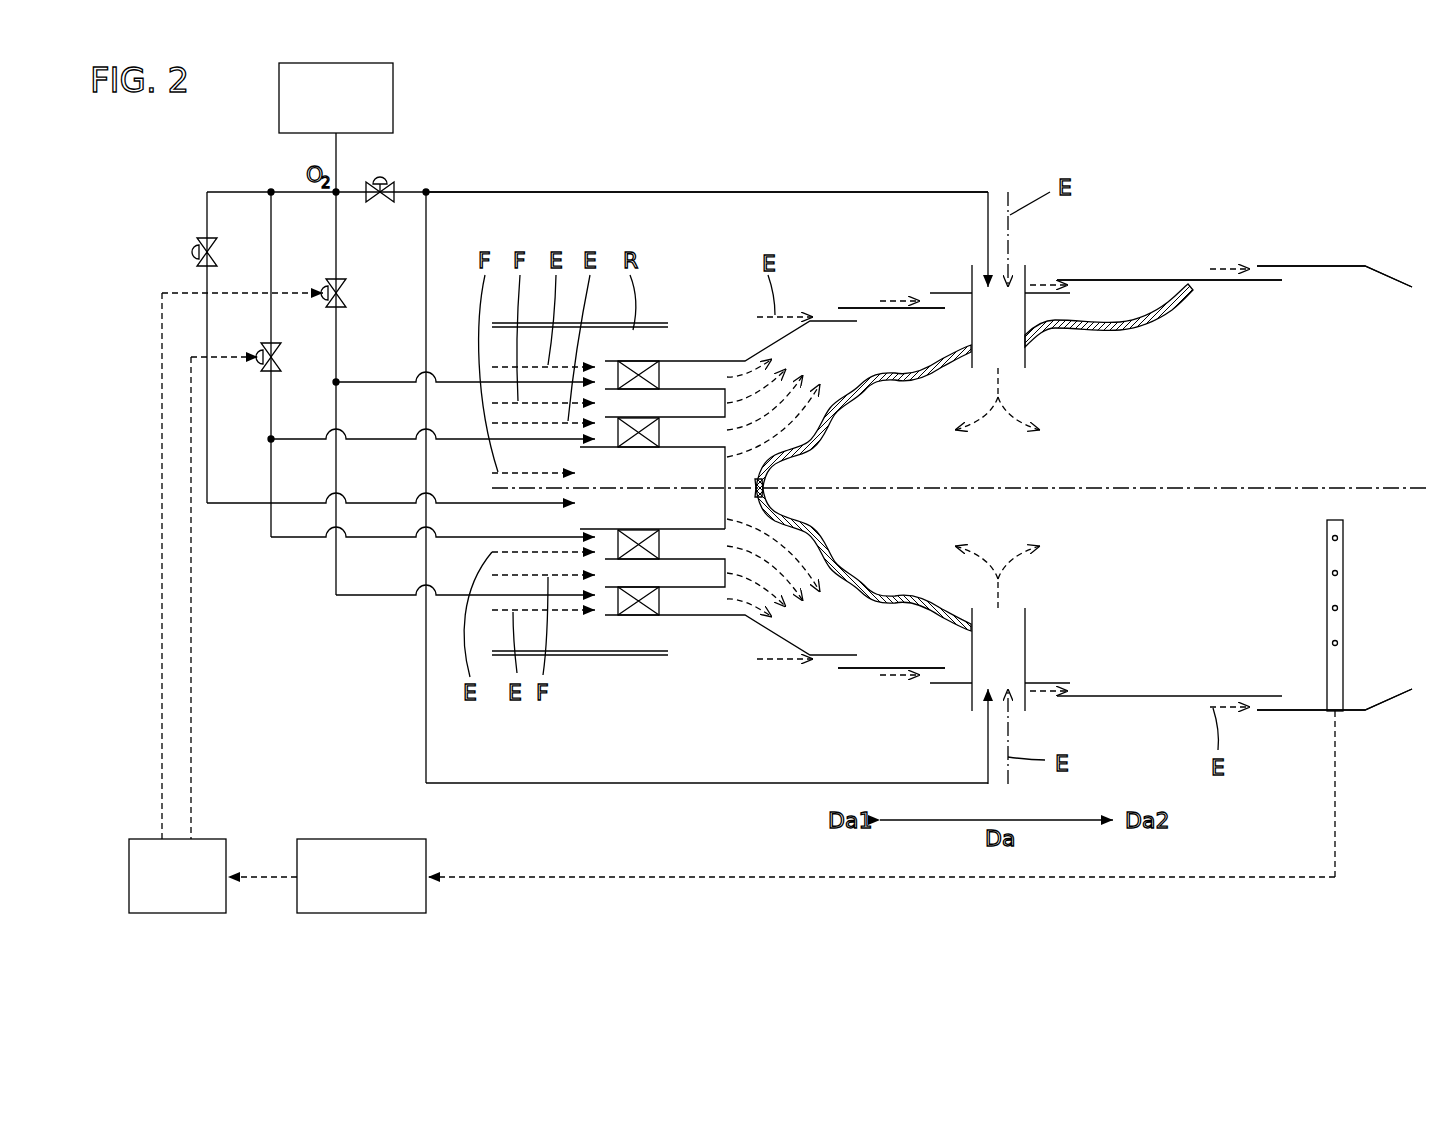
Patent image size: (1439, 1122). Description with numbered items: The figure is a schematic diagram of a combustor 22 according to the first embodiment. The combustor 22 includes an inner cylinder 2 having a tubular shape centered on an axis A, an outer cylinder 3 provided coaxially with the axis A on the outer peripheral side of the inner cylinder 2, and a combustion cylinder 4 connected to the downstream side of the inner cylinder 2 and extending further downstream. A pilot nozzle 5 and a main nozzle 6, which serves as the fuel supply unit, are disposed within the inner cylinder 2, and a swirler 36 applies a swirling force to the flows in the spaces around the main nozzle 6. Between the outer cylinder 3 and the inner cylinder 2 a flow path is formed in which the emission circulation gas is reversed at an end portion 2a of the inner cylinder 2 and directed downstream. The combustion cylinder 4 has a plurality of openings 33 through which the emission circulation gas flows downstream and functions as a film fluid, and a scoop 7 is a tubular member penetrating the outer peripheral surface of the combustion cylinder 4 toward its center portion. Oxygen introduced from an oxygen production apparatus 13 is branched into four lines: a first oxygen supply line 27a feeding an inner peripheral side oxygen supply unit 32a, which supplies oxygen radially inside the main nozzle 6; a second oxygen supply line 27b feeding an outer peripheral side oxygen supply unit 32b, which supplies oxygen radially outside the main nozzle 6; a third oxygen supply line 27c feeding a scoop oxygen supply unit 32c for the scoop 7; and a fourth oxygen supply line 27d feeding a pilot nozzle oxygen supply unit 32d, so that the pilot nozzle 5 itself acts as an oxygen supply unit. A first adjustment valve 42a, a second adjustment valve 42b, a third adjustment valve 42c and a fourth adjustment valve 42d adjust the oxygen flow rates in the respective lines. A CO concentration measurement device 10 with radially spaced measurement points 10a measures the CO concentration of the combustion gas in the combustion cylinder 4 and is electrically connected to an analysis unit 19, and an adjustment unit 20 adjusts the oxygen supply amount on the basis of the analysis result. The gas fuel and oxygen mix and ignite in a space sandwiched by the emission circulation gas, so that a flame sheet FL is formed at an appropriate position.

The oxygen production apparatus 13 is at (372, 127).
The first oxygen supply line 27a is at (271, 235).
The second oxygen supply line 27b is at (338, 322).
The third oxygen supply line 27c is at (752, 190).
The fourth oxygen supply line 27d is at (225, 505).
The inner peripheral side oxygen supply unit 32a is at (355, 546).
The outer peripheral side oxygen supply unit 32b is at (373, 599).
The scoop oxygen supply unit 32c is at (627, 186).
The pilot nozzle oxygen supply unit 32d is at (203, 455).
The first adjustment valve 42a is at (265, 368).
The second adjustment valve 42b is at (345, 290).
The third adjustment valve 42c is at (386, 180).
The fourth adjustment valve 42d is at (196, 252).
The main nozzle 6 is at (691, 386).
The inner cylinder 2 is at (688, 618).
The end portion of the inner cylinder 2a is at (603, 618).
The outer cylinder 3 is at (574, 657).
The pilot nozzle 5 is at (703, 538).
The swirler 36 is at (649, 358).
The scoop 7 is at (970, 277).
The opening 33 is at (851, 306).
The combustion cylinder 4 is at (1133, 278).
The combustor 22 is at (1334, 183).
The CO concentration measurement device 10 is at (1349, 597).
The measurement point 10a is at (1330, 540).
The analysis unit 19 is at (363, 913).
The adjustment unit 20 is at (178, 913).
The flame sheet FL is at (1127, 335).
The axis A is at (1378, 484).